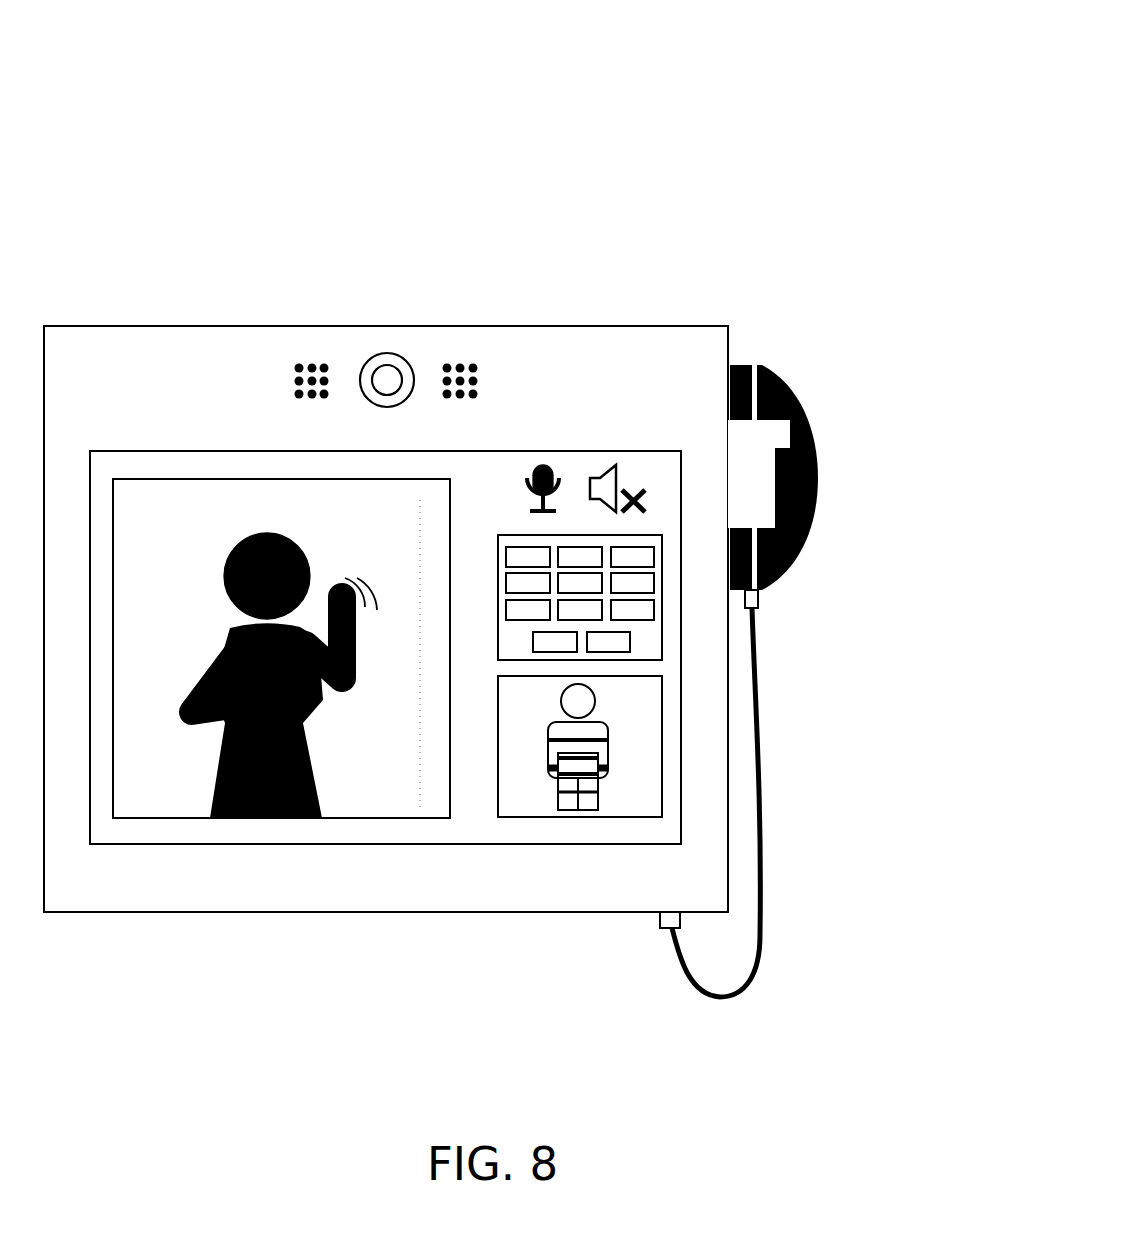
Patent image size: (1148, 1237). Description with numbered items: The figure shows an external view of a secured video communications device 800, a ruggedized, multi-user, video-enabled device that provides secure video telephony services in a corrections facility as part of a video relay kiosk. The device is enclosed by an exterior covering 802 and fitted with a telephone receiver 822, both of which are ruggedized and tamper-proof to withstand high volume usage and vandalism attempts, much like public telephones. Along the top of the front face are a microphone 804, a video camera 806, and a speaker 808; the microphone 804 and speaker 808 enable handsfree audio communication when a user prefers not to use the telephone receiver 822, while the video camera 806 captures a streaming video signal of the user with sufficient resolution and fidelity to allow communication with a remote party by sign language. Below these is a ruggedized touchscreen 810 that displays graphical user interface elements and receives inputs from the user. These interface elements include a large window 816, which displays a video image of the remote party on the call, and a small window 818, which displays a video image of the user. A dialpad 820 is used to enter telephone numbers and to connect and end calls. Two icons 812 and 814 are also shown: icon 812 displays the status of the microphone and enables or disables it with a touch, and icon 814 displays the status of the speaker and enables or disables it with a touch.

The secured video communications device 800 is at (750, 140).
The exterior covering 802 is at (127, 326).
The microphone 804 is at (312, 366).
The video camera 806 is at (387, 353).
The speaker 808 is at (460, 366).
The touchscreen 810 is at (217, 451).
The icon 812 is at (543, 464).
The icon 814 is at (612, 464).
The large window 816 is at (193, 818).
The small window 818 is at (532, 817).
The dialpad 820 is at (662, 633).
The telephone receiver 822 is at (820, 500).